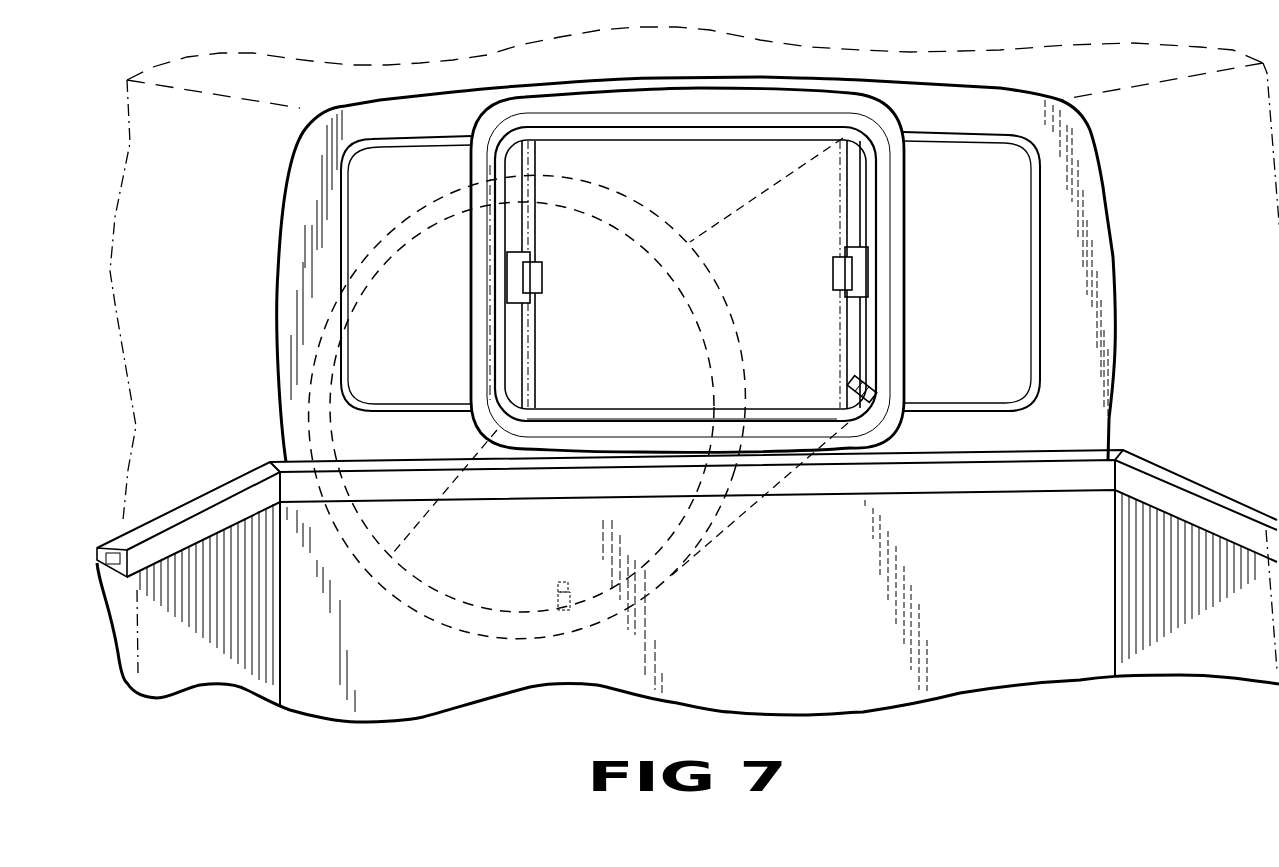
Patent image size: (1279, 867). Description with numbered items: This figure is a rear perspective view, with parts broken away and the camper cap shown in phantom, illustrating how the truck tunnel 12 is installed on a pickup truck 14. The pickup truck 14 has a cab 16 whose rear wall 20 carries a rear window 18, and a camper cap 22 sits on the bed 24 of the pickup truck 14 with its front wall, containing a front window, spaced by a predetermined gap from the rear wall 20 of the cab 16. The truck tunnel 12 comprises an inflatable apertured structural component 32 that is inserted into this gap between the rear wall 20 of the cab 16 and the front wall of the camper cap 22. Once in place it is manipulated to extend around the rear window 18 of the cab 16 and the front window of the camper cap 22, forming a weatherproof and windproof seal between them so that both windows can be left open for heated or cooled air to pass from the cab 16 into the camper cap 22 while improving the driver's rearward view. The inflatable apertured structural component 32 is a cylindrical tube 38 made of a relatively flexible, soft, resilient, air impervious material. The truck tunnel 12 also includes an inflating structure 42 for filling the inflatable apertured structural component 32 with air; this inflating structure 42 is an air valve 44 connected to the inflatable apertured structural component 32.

The truck tunnel 12 is at (925, 273).
The pickup truck 14 is at (740, 269).
The cab 16 is at (1123, 259).
The rear window 18 is at (1007, 345).
The rear wall 20 is at (293, 253).
The camper cap 22 is at (658, 350).
The bed 24 is at (137, 630).
The inflatable apertured structural component 32 is at (526, 407).
The cylindrical tube 38 is at (652, 420).
The inflating structure 42 is at (871, 369).
The air valve 44 is at (849, 403).